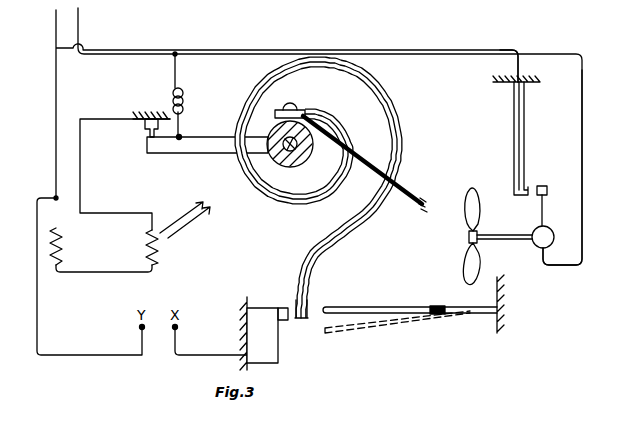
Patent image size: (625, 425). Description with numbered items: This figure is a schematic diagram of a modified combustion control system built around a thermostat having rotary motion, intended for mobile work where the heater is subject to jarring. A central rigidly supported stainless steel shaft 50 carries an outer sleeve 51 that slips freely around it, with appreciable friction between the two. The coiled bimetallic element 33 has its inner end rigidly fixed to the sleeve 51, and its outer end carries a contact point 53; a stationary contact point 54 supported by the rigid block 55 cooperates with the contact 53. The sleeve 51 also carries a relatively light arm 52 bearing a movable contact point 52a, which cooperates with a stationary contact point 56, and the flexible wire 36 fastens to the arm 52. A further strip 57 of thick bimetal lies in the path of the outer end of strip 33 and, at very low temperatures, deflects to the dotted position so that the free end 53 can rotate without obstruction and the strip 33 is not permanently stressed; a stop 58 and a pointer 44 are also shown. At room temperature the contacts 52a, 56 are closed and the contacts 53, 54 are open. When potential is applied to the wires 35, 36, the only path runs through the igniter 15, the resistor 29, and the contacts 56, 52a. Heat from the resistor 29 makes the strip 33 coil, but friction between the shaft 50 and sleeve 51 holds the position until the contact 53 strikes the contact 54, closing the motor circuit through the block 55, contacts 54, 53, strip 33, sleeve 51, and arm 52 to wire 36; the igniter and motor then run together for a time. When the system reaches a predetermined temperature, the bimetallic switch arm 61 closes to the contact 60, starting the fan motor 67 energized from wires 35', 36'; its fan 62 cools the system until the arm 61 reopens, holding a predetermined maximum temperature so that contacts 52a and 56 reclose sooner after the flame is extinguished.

The igniter 15 is at (63, 245).
The resistor 29 is at (157, 249).
The coiled bimetallic element 33 is at (390, 113).
The wire 35 is at (270, 105).
The wire 36 is at (330, 136).
The wire 35' is at (501, 53).
The wire 36' is at (578, 167).
The pointer 44 is at (362, 160).
The shaft 50 is at (312, 145).
The sleeve 51 is at (287, 168).
The arm 52 is at (200, 137).
The contact point 52a is at (148, 132).
The contact point 53 is at (295, 308).
The stationary contact point 54 is at (284, 321).
The rigid block 55 is at (259, 308).
The stationary contact point 56 is at (141, 123).
The bimetallic strip 57 is at (360, 307).
The stop 58 is at (500, 318).
The contact 60 is at (545, 186).
The bimetallic switch arm 61 is at (514, 126).
The fan 62 is at (467, 202).
The fan motor 67 is at (550, 228).